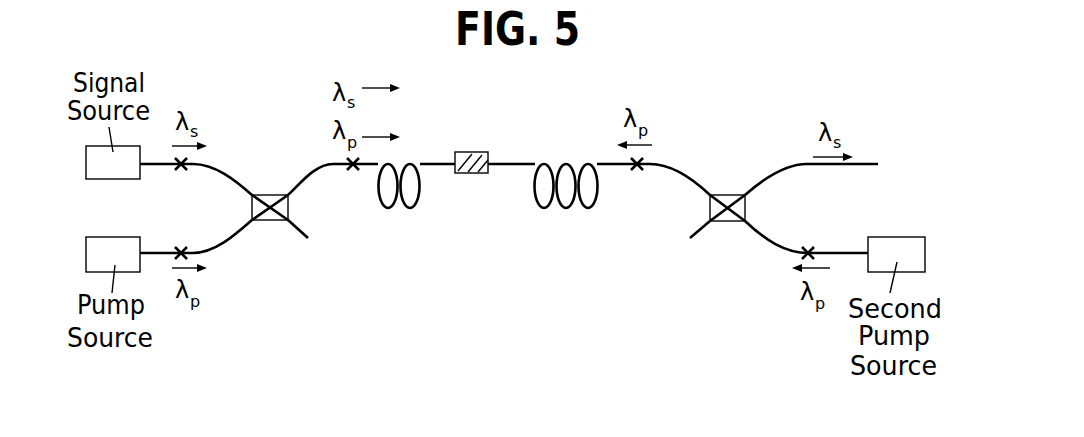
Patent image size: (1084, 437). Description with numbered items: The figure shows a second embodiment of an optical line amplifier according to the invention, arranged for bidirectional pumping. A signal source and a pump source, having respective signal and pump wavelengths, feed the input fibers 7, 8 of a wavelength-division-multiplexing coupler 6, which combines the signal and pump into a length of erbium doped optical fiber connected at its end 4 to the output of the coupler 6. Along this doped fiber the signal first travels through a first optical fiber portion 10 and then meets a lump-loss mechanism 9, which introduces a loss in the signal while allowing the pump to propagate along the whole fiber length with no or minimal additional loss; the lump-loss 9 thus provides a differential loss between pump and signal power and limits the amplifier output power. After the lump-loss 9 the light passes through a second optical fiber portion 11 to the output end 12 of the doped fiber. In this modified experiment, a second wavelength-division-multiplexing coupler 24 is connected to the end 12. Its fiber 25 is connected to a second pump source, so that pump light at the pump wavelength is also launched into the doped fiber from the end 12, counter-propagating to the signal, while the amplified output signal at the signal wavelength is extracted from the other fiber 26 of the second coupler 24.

The end 4 is at (353, 170).
The wavelength-division-multiplexing coupler 6 is at (269, 246).
The input fiber 7 is at (212, 162).
The input fiber 8 is at (212, 247).
The lump-loss mechanism 9 is at (473, 150).
The first optical fiber portion 10 is at (413, 203).
The second optical fiber portion 11 is at (565, 210).
The output end 12 is at (638, 170).
The second wavelength-division-multiplexing coupler 24 is at (732, 223).
The fiber 25 is at (767, 233).
The fiber 26 is at (863, 160).